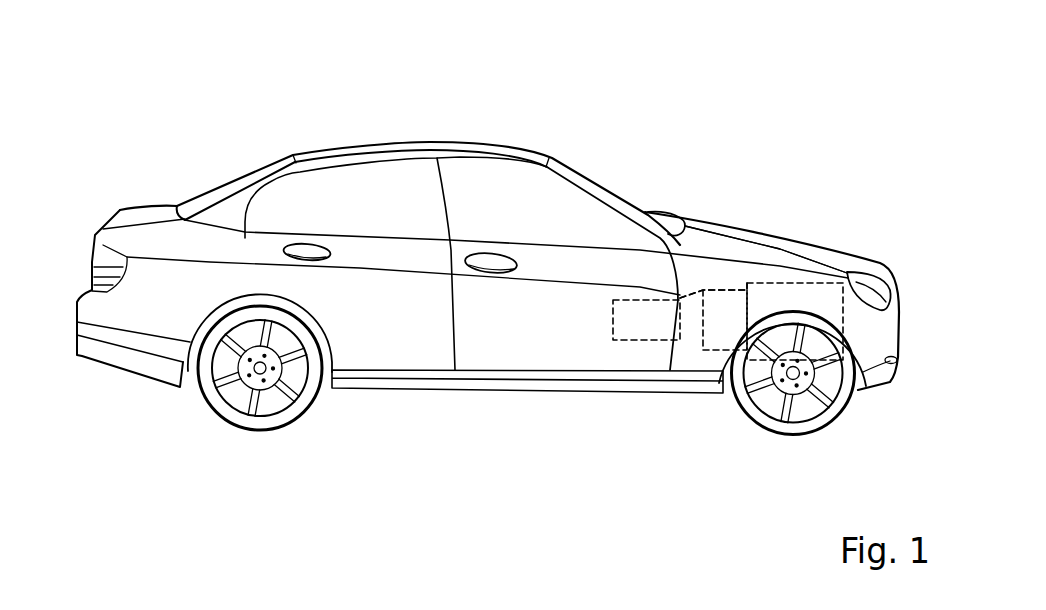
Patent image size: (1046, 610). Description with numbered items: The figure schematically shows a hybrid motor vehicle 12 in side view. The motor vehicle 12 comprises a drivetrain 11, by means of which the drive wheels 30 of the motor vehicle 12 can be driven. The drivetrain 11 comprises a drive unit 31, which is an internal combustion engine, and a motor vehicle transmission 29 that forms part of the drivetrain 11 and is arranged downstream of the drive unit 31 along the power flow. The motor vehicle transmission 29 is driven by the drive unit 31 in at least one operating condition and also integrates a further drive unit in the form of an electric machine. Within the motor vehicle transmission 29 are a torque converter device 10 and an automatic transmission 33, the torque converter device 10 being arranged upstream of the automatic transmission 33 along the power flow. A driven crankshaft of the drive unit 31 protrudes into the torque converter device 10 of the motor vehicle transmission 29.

The motor vehicle 12 is at (488, 282).
The torque converter device 10 is at (728, 318).
The drivetrain 11 is at (771, 245).
The motor vehicle transmission 29 is at (686, 272).
The drive wheels 30 is at (278, 424).
The drive unit 31 is at (822, 295).
The automatic transmission 33 is at (640, 312).